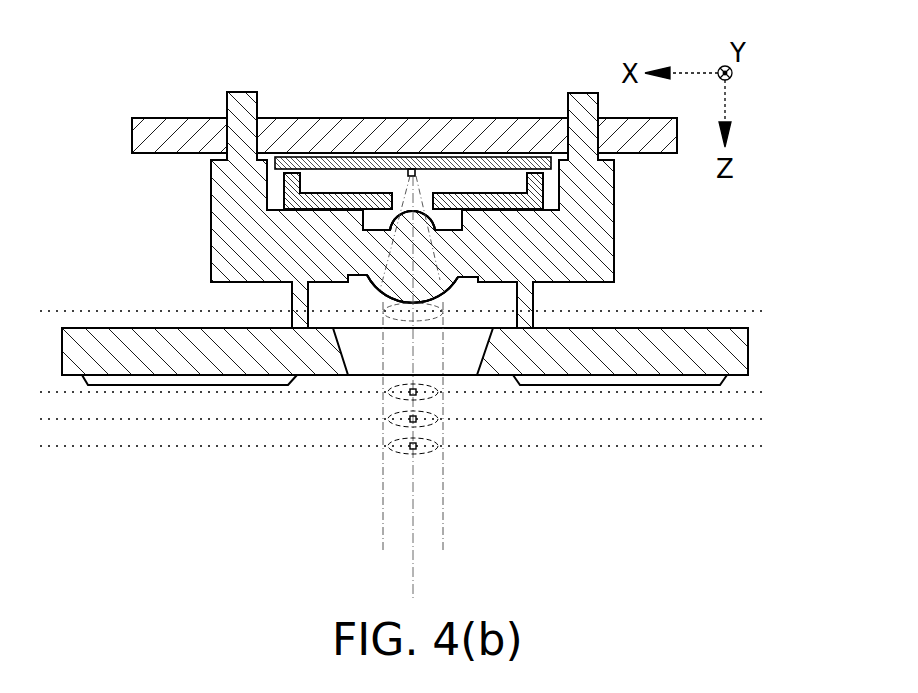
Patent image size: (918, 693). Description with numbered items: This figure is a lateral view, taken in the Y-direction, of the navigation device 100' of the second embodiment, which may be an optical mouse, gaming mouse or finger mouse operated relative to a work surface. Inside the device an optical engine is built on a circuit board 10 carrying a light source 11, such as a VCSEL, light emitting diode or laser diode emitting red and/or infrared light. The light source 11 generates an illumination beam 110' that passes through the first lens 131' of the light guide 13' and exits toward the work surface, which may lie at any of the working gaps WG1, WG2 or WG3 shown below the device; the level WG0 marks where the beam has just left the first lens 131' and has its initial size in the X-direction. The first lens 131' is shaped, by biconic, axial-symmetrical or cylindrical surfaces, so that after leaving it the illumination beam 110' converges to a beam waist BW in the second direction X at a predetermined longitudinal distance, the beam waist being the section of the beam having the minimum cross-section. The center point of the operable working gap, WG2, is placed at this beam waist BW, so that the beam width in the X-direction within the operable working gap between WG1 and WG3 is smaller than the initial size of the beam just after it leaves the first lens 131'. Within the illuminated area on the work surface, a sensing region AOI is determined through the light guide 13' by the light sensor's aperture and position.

The navigation device 100' is at (419, 170).
The circuit board 10 is at (360, 160).
The light source 11 is at (406, 173).
The light guide 13' is at (419, 210).
The first lens 131' is at (542, 257).
The working gap WG0 is at (436, 312).
The working gap WG1 is at (436, 393).
The working gap WG2 is at (436, 420).
The working gap WG3 is at (436, 447).
The beam waist BW is at (385, 420).
The sensing region AOI is at (413, 449).
The illumination beam 110' is at (388, 458).